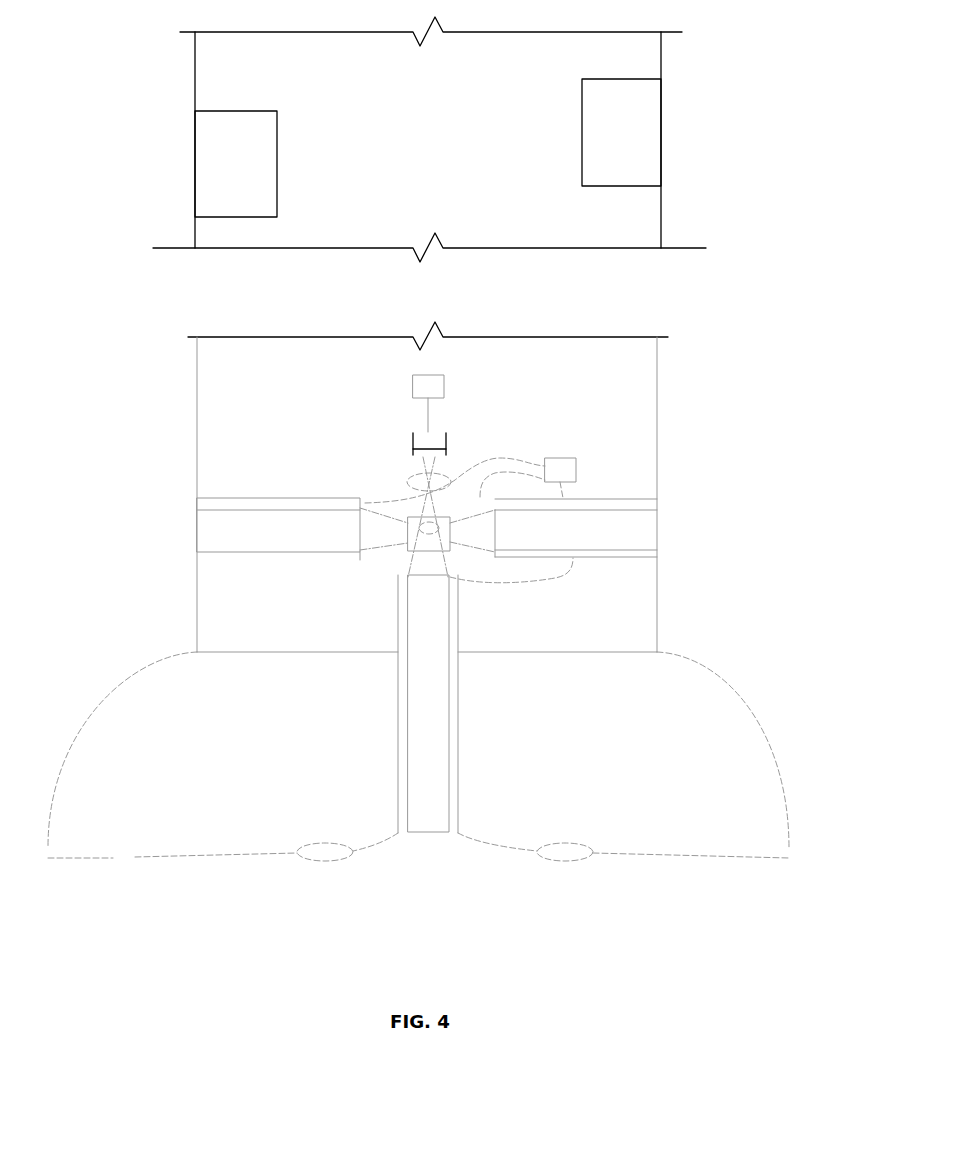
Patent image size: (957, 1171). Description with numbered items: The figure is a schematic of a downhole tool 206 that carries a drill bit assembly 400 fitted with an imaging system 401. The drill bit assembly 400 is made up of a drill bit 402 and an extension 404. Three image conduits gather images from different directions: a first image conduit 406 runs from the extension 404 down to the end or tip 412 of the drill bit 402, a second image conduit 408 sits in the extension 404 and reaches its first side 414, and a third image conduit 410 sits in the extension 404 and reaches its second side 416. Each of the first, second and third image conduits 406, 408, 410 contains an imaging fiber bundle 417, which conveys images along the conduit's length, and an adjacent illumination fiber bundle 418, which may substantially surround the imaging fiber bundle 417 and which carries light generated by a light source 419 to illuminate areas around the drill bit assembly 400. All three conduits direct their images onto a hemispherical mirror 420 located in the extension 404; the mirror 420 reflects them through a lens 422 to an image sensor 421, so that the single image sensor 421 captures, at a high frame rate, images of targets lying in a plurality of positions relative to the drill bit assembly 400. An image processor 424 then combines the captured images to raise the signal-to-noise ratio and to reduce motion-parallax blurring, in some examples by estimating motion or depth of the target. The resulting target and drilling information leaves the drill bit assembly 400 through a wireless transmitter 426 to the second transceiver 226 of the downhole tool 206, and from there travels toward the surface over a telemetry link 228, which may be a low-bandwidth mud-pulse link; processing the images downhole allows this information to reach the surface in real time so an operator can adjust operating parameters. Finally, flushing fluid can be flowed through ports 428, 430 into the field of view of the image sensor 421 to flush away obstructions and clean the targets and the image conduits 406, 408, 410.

The downhole tool 206 is at (225, 85).
The second transceiver 226 is at (215, 157).
The telemetry link 228 is at (630, 120).
The drill bit assembly 400 is at (705, 315).
The imaging system 401 is at (574, 404).
The drill bit 402 is at (122, 718).
The extension 404 is at (228, 415).
The first image conduit 406 is at (430, 820).
The second image conduit 408 is at (208, 527).
The third image conduit 410 is at (647, 527).
The tip of the drill bit 412 is at (418, 870).
The first side of the extension 414 is at (197, 353).
The second side of the extension 416 is at (657, 360).
The imaging fiber bundle 417 is at (438, 631).
The illumination fiber bundle 418 is at (200, 557).
The light source 419 is at (572, 463).
The hemispherical mirror 420 is at (411, 546).
The image sensor 421 is at (415, 452).
The lens 422 is at (413, 477).
The image processor 424 is at (415, 439).
The wireless transmitter 426 is at (412, 385).
The port 428 is at (325, 853).
The port 430 is at (560, 858).